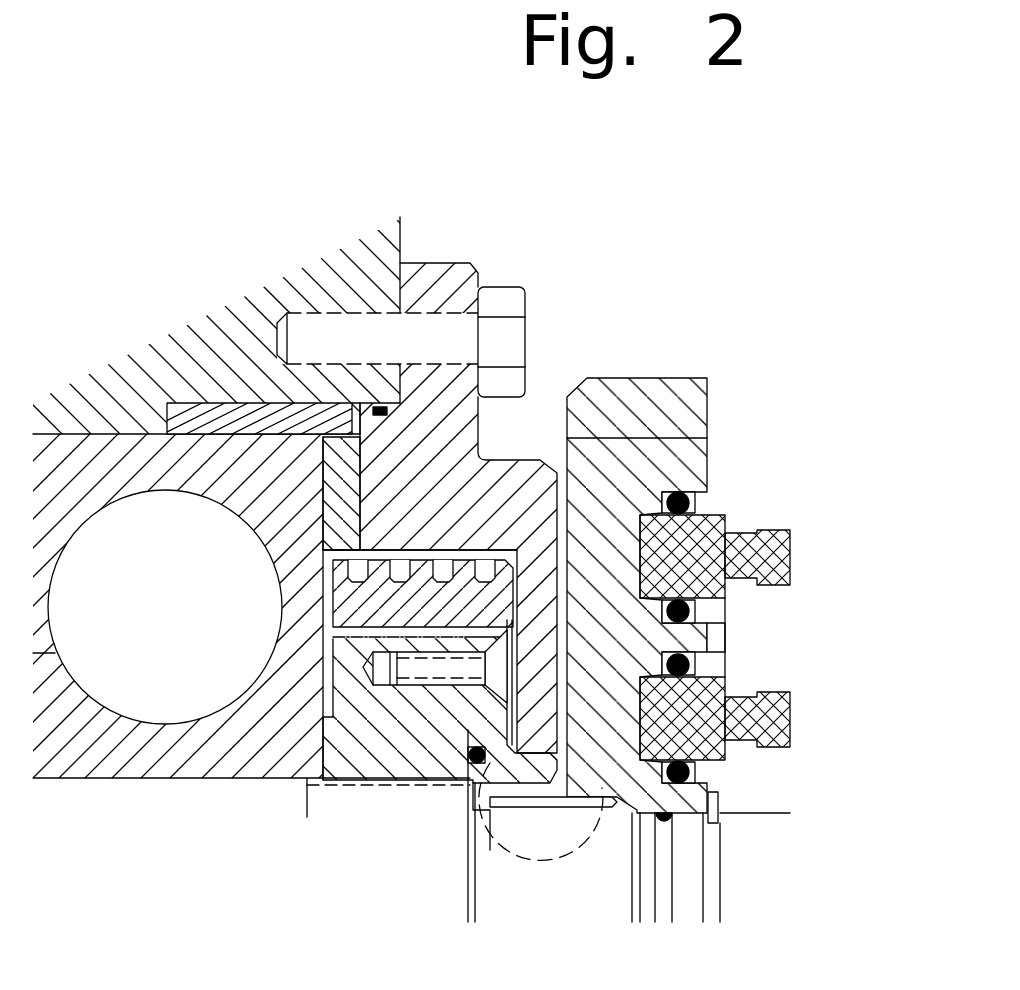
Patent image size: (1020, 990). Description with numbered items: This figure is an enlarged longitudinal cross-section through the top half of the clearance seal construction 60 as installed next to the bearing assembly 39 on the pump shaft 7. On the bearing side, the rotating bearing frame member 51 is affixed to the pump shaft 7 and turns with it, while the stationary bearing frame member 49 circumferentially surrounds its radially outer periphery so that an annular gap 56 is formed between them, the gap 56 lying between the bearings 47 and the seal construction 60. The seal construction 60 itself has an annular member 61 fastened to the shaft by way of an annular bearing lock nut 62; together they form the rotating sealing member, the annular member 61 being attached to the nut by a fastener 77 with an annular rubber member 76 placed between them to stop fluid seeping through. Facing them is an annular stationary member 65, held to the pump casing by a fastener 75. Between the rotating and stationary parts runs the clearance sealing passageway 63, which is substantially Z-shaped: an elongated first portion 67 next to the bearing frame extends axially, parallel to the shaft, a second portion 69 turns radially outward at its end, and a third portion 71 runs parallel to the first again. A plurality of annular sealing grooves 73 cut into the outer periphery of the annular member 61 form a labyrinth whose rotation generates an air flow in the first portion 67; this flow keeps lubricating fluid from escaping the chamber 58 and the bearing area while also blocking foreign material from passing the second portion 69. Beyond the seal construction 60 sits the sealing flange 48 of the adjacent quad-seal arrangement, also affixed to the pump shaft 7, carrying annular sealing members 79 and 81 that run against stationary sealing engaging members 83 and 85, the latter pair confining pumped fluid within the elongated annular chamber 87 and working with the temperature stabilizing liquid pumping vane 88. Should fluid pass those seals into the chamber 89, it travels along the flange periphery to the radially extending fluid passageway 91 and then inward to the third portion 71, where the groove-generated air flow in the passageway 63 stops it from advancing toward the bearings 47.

The pump shaft 7 is at (124, 930).
The bearing assembly 39 is at (57, 365).
The bearings 47 is at (110, 612).
The sealing flange 48 is at (680, 547).
The stationary bearing frame member 49 is at (183, 453).
The rotating bearing frame member 51 is at (147, 777).
The annular gap 56 is at (346, 587).
The chamber 58 is at (365, 667).
The clearance seal construction 60 is at (687, 551).
The annular member 61 is at (363, 607).
The annular bearing lock nut 62 is at (347, 787).
The clearance sealing passageway 63 is at (483, 557).
The annular stationary member 65 is at (418, 460).
The first portion of sealing passageway 67 is at (423, 554).
The second portion of sealing passageway 69 is at (515, 722).
The third portion of sealing passageway 71 is at (650, 840).
The annular sealing grooves 73 is at (477, 573).
The fastener 75 is at (497, 297).
The annular rubber member 76 is at (443, 787).
The fastener 77 is at (293, 780).
The annular sealing member 79 is at (692, 545).
The annular sealing member 81 is at (703, 807).
The stationary annular sealing engaging member 83 is at (753, 553).
The stationary annular sealing engaging member 85 is at (740, 730).
The elongated annular chamber 87 is at (800, 805).
The temperature stabilizing liquid pumping vane 88 is at (715, 627).
The chamber 89 is at (515, 440).
The radially extending fluid passageway 91 is at (615, 448).